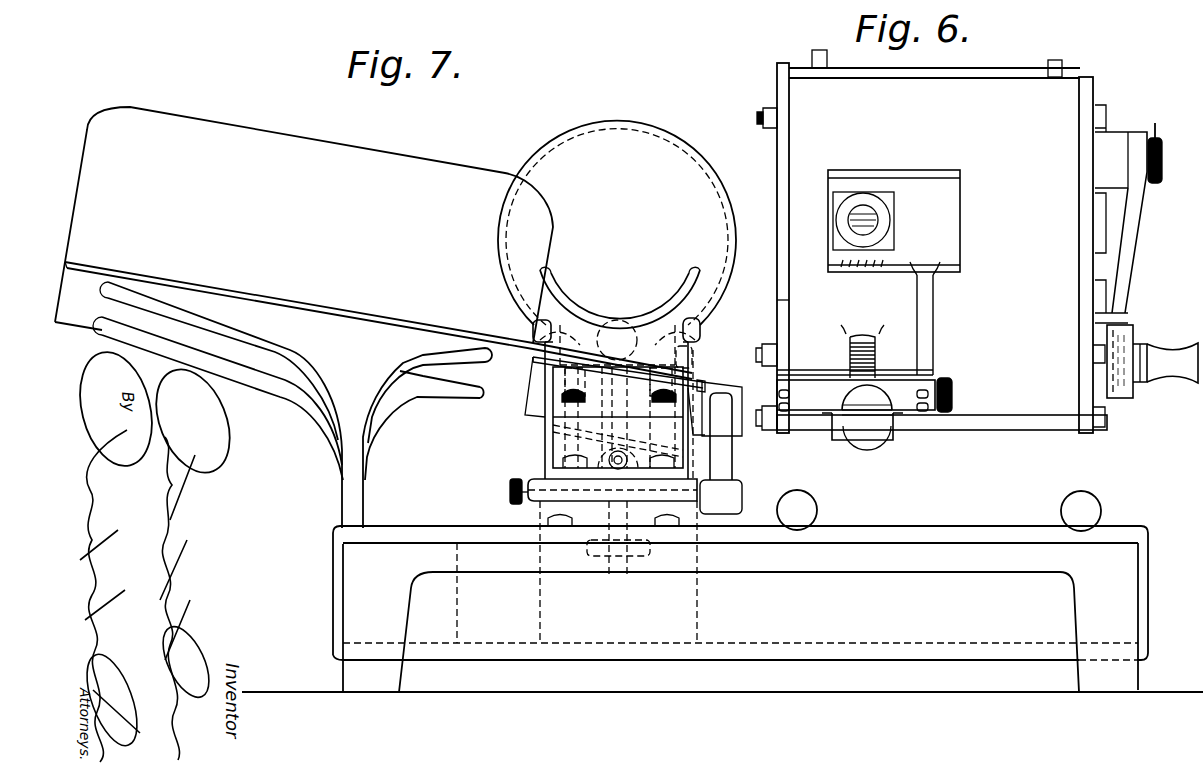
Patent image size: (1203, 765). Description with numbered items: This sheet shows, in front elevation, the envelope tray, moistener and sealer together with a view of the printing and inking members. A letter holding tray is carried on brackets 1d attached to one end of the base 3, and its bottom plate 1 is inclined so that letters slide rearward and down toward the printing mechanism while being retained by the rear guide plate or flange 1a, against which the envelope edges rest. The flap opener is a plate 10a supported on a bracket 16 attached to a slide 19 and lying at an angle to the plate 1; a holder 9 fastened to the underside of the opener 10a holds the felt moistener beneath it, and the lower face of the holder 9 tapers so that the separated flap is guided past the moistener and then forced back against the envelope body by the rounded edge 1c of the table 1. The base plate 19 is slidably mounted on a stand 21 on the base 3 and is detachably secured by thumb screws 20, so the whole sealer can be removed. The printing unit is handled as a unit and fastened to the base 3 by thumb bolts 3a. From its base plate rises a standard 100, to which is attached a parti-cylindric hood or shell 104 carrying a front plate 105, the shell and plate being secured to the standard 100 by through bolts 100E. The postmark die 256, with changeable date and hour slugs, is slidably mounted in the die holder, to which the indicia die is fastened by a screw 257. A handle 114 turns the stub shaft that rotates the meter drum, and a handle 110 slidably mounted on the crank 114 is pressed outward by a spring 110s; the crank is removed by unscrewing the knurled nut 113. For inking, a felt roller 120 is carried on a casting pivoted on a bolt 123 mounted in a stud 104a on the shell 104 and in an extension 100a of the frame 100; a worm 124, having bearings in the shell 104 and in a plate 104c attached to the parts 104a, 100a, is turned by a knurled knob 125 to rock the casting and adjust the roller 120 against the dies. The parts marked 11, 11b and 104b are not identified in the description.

In FIG. 7, the bottom plate 1 is at (287, 301).
In FIG. 7, the rear guide flange 1a is at (237, 147).
In FIG. 7, the rounded edge 1c is at (737, 415).
In FIG. 7, the brackets 1d is at (302, 380).
In FIG. 7, the base 3 is at (358, 612).
In FIG. 7, the thumb bolts 3a is at (808, 511).
In FIG. 7, the holder 9 is at (562, 418).
In FIG. 7, the flap opener plate 10a is at (697, 373).
In FIG. 7, the disk wheel 11 is at (713, 245).
In FIG. 7, the yoke cradle 11b is at (690, 341).
In FIG. 7, the bracket 16 is at (572, 440).
In FIG. 7, the slide 19 is at (602, 488).
In FIG. 7, the thumb screws 20 is at (510, 492).
In FIG. 7, the stand 21 is at (535, 508).
In FIG. 6, the standard 100 is at (780, 77).
In FIG. 6, the frame extension 100a is at (777, 317).
In FIG. 6, the through bolts 100E is at (777, 122).
In FIG. 6, the shell 104 is at (1053, 112).
In FIG. 6, the stud 104a is at (930, 334).
In FIG. 6, the stamp plate 104b is at (953, 210).
In FIG. 6, the plate 104c is at (892, 382).
In FIG. 6, the front plate 105 is at (1085, 85).
In FIG. 6, the handle 110 is at (1170, 368).
In FIG. 6, the spring 110s is at (1120, 393).
In FIG. 6, the knurled nut 113 is at (1138, 210).
In FIG. 6, the crank handle 114 is at (1127, 262).
In FIG. 6, the felt inking roller 120 is at (842, 432).
In FIG. 6, the pivot bolt 123 is at (953, 398).
In FIG. 6, the worm 124 is at (850, 358).
In FIG. 6, the knurled knob 125 is at (868, 427).
In FIG. 6, the postmark die 256 is at (890, 203).
In FIG. 6, the screw 257 is at (892, 257).